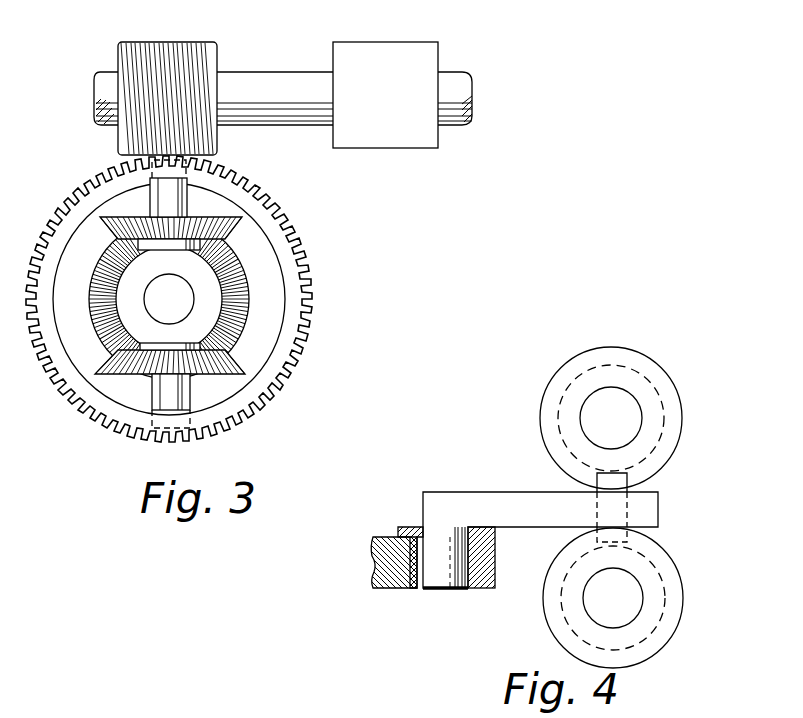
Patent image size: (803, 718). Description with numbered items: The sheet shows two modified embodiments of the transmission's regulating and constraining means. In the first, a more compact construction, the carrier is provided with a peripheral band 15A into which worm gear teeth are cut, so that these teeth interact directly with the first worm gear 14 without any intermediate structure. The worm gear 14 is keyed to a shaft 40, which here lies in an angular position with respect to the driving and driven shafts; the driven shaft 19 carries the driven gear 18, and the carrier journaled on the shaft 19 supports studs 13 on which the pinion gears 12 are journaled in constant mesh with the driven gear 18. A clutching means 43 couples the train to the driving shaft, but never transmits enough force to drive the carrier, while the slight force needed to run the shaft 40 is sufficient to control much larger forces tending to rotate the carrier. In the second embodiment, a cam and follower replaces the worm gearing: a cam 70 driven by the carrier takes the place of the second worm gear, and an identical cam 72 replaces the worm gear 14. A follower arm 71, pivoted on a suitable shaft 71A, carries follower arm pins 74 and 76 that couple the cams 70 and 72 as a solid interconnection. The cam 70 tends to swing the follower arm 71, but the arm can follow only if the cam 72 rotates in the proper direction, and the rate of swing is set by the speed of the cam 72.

In FIG. 3, the pinion gear 12 is at (200, 378).
In FIG. 3, the stud 13 is at (174, 250).
In FIG. 3, the first worm gear 14 is at (218, 46).
In FIG. 3, the peripheral band 15A is at (300, 255).
In FIG. 3, the driven gear 18 is at (128, 253).
In FIG. 3, the driven shaft 19 is at (165, 306).
In FIG. 4, the driven shaft 19 is at (634, 607).
In FIG. 3, the shaft 40 is at (286, 72).
In FIG. 4, the shaft 40 is at (633, 424).
In FIG. 3, the clutching means 43 is at (402, 150).
In FIG. 4, the cam 70 is at (684, 600).
In FIG. 4, the follower arm 71 is at (510, 491).
In FIG. 4, the follower arm pivot shaft 71A is at (437, 592).
In FIG. 4, the cam 72 is at (675, 391).
In FIG. 4, the follower arm pin 74 is at (630, 478).
In FIG. 4, the follower arm pin 76 is at (630, 540).